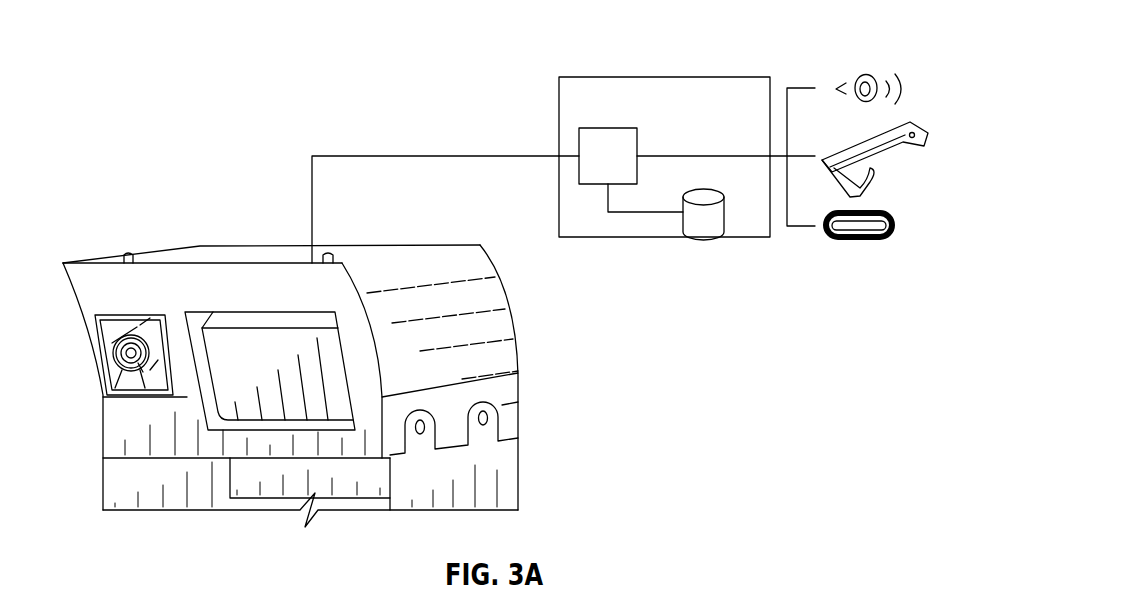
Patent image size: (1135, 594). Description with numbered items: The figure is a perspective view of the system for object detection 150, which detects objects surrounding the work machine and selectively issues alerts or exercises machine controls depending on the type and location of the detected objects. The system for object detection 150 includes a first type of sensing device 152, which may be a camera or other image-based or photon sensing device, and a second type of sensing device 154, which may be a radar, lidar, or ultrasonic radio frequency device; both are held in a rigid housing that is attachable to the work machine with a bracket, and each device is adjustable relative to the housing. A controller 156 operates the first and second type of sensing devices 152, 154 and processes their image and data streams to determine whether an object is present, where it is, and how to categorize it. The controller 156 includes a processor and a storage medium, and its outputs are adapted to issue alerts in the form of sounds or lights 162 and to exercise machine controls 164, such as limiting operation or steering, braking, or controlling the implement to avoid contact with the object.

The system for object detection 150 is at (187, 72).
The first type of sensing device 152 is at (110, 377).
The second type of sensing device 154 is at (223, 378).
The controller 156 is at (630, 77).
The sounds or lights 162 is at (902, 78).
The machine controls 164 is at (893, 132).